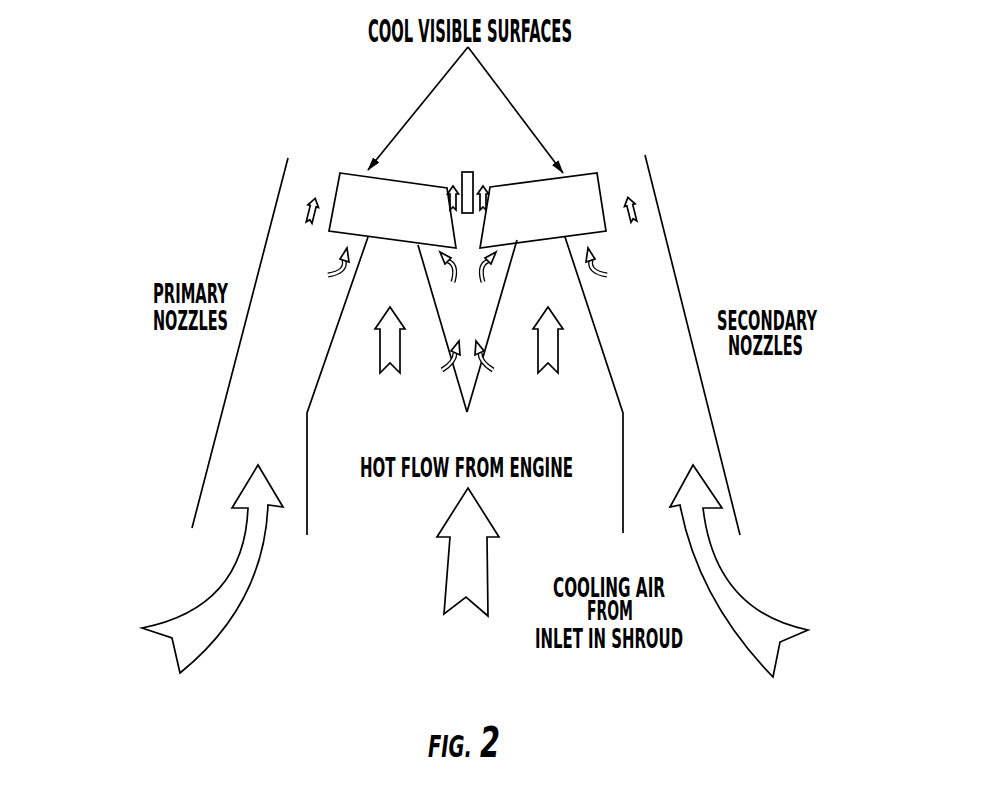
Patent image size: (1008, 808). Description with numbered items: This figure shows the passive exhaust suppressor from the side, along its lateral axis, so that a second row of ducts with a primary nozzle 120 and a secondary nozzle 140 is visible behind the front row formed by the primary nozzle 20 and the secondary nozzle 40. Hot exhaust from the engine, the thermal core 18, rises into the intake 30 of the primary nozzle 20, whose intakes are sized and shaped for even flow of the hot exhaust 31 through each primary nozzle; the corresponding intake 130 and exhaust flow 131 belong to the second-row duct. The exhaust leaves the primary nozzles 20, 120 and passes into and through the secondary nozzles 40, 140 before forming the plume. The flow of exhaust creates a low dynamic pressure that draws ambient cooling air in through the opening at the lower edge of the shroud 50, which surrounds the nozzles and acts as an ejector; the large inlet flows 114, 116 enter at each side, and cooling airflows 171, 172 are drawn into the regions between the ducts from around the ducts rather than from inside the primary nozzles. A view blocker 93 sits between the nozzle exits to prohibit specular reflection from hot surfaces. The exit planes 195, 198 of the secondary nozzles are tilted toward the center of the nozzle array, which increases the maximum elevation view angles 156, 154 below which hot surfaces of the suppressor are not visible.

The thermal core 18 is at (468, 568).
The primary nozzle 20 is at (322, 363).
The primary nozzle 120 is at (488, 327).
The intake 30 is at (390, 417).
The cooling air flow 130 is at (540, 430).
The hot exhaust 31 is at (390, 355).
The cooling air stream 131 is at (545, 355).
The secondary nozzle 40 is at (460, 233).
The secondary nozzle 140 is at (618, 237).
The shroud 50 is at (707, 405).
The view blocker 93 is at (468, 47).
The exit plane of secondary nozzle 195 is at (340, 173).
The exit plane of secondary nozzle 198 is at (630, 167).
The cooling air inlet flow 114 is at (208, 569).
The cooling air inlet flow 116 is at (745, 571).
The elevation view angle 154 is at (678, 150).
The elevation view angle 156 is at (255, 148).
The cooling airflow 171 is at (434, 357).
The cooling airflow 172 is at (500, 357).